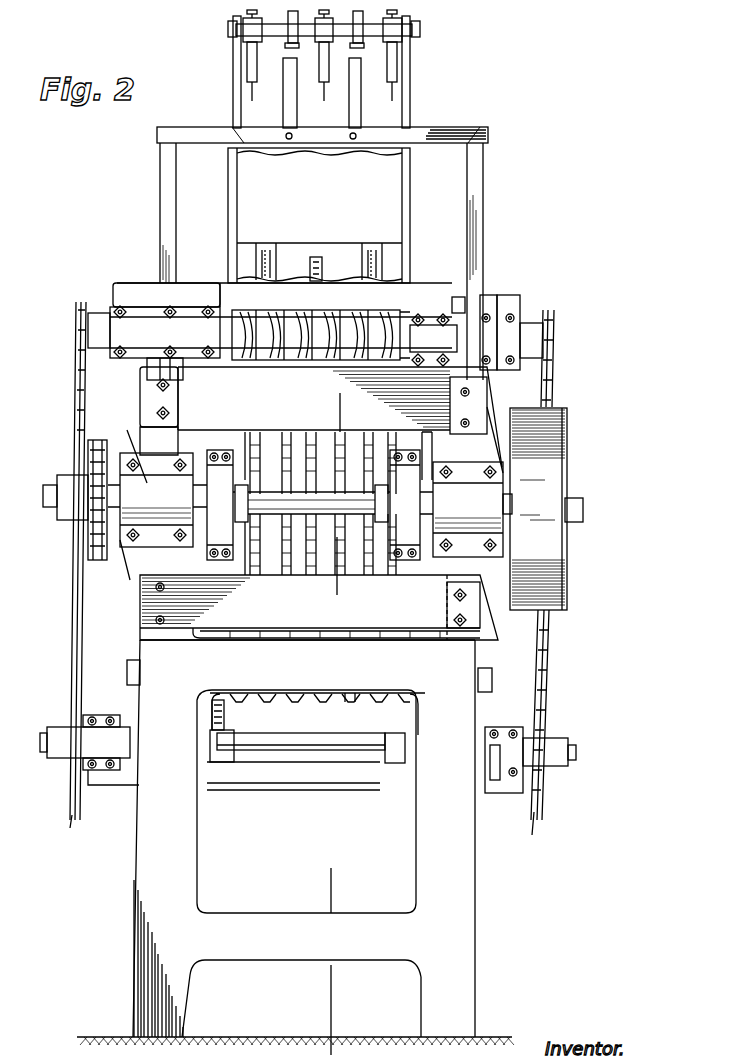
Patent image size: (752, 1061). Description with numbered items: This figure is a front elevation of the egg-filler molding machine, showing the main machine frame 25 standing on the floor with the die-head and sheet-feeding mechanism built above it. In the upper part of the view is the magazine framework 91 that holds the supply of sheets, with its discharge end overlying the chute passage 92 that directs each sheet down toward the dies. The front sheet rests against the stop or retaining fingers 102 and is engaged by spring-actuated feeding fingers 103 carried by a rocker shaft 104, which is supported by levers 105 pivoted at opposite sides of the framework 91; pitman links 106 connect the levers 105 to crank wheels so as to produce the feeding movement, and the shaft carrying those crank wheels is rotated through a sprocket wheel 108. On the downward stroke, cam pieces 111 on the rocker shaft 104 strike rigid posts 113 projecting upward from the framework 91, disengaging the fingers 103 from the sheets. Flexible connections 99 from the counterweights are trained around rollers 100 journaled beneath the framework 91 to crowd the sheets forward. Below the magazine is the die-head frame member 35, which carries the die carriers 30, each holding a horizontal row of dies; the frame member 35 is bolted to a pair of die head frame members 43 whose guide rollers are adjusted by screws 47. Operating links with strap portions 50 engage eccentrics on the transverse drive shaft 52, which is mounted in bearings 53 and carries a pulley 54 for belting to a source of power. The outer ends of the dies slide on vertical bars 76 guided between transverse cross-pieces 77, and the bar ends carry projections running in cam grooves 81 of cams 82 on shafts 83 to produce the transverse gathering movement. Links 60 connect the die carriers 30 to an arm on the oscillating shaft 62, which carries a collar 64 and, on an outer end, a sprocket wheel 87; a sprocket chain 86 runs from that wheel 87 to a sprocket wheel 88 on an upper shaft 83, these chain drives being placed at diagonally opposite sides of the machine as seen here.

The rocker shaft 104 is at (420, 31).
The levers 105 is at (233, 60).
The feeding fingers 103 is at (252, 96).
The cam pieces 111 is at (298, 36).
The posts 113 is at (335, 108).
The retaining fingers 102 is at (215, 125).
The pitman links 106 is at (228, 172).
The magazine framework 91 is at (402, 207).
The flexible connections 99 is at (372, 243).
The rollers 100 is at (350, 262).
The sprocket wheel 108 is at (318, 257).
The frame member 35 is at (120, 283).
The shafts 83 is at (220, 305).
The cam grooves 81 is at (380, 300).
The cams 82 is at (402, 305).
The sprocket wheel 88 is at (80, 300).
The cross-pieces 77 is at (222, 370).
The screws 47 is at (430, 440).
The die head frame members 43 is at (425, 436).
The bearings 53 is at (138, 460).
The strap portions 50 is at (178, 503).
The drive shaft 52 is at (583, 508).
The sprocket chains 86 is at (68, 640).
The vertical bars 76 is at (272, 440).
The die carriers 30 is at (290, 437).
The pulley 54 is at (562, 442).
The main machine frame 25 is at (139, 697).
The links 60 is at (228, 712).
The oscillating shaft 62 is at (305, 750).
The chute passage 92 is at (352, 703).
The collar 64 is at (480, 757).
The sprocket wheels 87 is at (298, 835).